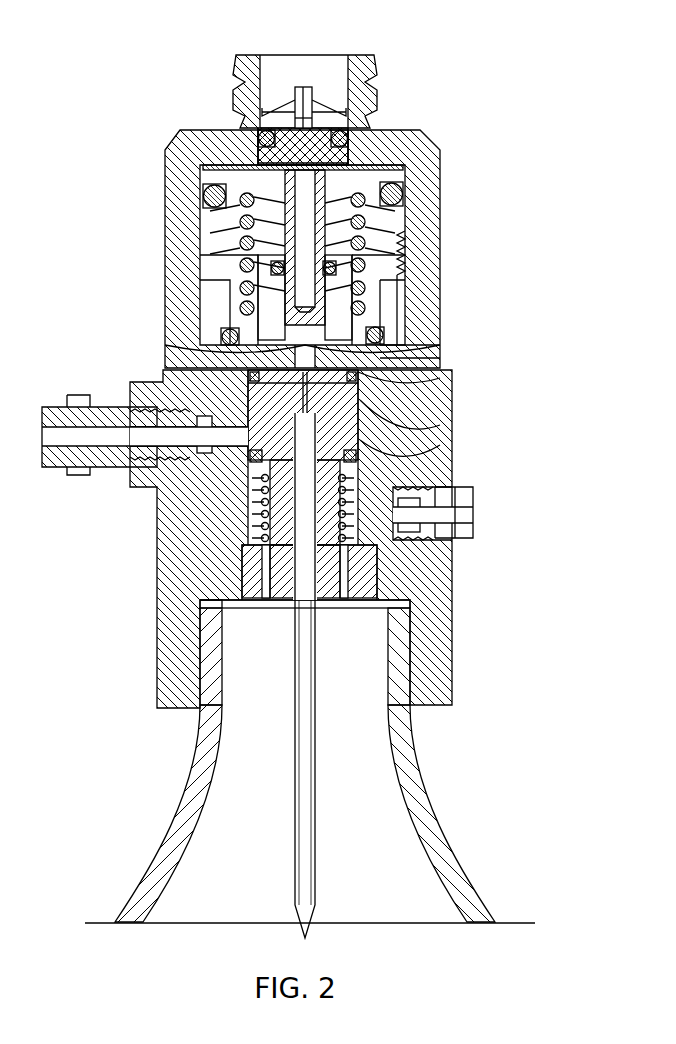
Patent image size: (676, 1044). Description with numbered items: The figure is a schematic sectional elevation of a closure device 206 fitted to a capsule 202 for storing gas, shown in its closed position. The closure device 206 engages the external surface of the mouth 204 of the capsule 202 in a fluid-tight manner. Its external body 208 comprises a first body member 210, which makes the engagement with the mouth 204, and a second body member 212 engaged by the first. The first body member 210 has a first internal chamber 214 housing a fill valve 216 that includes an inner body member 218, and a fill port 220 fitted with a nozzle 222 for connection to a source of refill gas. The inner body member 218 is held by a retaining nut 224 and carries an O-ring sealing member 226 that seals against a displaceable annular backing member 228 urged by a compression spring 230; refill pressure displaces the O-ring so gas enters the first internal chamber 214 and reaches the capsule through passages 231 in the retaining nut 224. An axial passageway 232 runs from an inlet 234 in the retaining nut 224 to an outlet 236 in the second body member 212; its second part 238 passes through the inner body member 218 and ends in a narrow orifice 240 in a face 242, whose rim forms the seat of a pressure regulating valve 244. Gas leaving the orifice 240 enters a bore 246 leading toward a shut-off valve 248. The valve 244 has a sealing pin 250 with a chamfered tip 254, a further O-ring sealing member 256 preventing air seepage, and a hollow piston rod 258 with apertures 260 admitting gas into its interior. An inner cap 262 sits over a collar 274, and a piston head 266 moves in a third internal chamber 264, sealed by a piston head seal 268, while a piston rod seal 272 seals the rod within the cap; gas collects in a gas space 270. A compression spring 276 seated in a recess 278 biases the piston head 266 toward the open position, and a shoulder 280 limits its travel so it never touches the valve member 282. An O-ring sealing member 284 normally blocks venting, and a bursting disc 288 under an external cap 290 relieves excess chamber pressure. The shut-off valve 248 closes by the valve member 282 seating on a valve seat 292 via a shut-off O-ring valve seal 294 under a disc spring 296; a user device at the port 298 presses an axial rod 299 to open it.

The capsule 202 is at (425, 815).
The mouth 204 is at (395, 688).
The closure device 206 is at (452, 599).
The external body 208 is at (157, 515).
The first body member 210 is at (175, 530).
The second body member 212 is at (225, 122).
The first internal chamber 214 is at (355, 530).
The fill valve 216 is at (445, 457).
The inner body member 218 is at (420, 400).
The fill port 220 is at (258, 478).
The nozzle 222 is at (107, 467).
The retaining nut 224 is at (222, 605).
The O-ring sealing member 226 is at (250, 440).
The displaceable annular backing member 228 is at (350, 440).
The compression spring 230 is at (300, 517).
The passages 231 is at (342, 587).
The axial passageway 232 is at (372, 573).
The inlet 234 is at (293, 612).
The outlet 236 is at (288, 65).
The second part of the axial passageway 238 is at (370, 425).
The orifice 240 is at (265, 352).
The face 242 is at (400, 360).
The pressure regulating valve 244 is at (230, 282).
The bore 246 is at (385, 340).
The shut-off valve 248 is at (352, 117).
The sealing pin 250 is at (225, 330).
The chamfered tip 254 is at (365, 328).
The further O-ring sealing member 256 is at (360, 385).
The hollow piston rod 258 is at (322, 242).
The apertures 260 is at (410, 285).
The inner cap 262 is at (240, 262).
The third internal chamber 264 is at (203, 198).
The piston head 266 is at (403, 195).
The piston head seal 268 is at (210, 175).
The gas space 270 is at (210, 170).
The piston rod seal 272 is at (250, 245).
The collar 274 is at (375, 302).
The compression spring 276 is at (265, 265).
The recess 278 is at (365, 222).
The shoulder 280 is at (395, 152).
The valve member 282 is at (346, 104).
The O-ring sealing member 284 is at (262, 300).
The bursting disc 288 is at (452, 545).
The external cap 290 is at (473, 533).
The valve seat 292 is at (385, 163).
The shut-off O-ring valve seal 294 is at (272, 116).
The disc spring 296 is at (328, 100).
The port 298 is at (350, 56).
The axial rod 299 is at (303, 100).